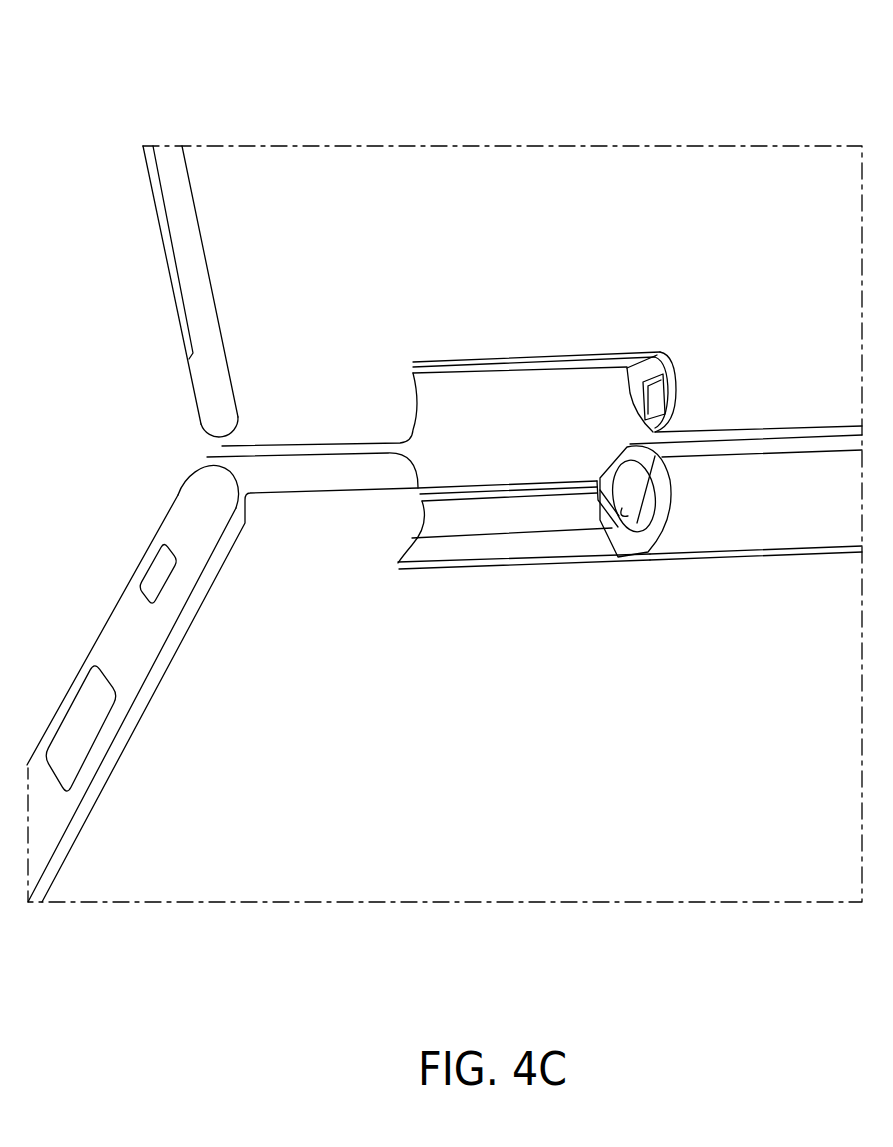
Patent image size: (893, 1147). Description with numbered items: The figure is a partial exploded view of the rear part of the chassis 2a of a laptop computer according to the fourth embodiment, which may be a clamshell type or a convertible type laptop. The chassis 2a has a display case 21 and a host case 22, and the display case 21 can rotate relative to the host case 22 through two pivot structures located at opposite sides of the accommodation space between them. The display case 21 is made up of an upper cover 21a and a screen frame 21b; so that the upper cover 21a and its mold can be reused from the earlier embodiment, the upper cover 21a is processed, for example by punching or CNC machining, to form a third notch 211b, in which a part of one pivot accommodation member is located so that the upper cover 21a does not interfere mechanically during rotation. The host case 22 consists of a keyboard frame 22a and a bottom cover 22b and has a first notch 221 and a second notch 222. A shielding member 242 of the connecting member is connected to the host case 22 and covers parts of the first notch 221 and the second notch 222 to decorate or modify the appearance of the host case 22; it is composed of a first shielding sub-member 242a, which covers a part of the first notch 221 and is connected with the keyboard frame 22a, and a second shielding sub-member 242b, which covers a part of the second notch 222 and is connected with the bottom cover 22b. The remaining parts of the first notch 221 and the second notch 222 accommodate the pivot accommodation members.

The chassis 2a is at (138, 58).
The display case 21 is at (136, 291).
The upper cover 21a is at (228, 296).
The screen frame 21b is at (168, 256).
The third notch 211b is at (552, 378).
The host case 22 is at (220, 678).
The keyboard frame 22a is at (173, 484).
The bottom cover 22b is at (198, 665).
The first notch 221 is at (483, 503).
The second notch 222 is at (572, 542).
The shielding member 242 is at (731, 546).
The first shielding sub-member 242a is at (708, 444).
The second shielding sub-member 242b is at (775, 517).